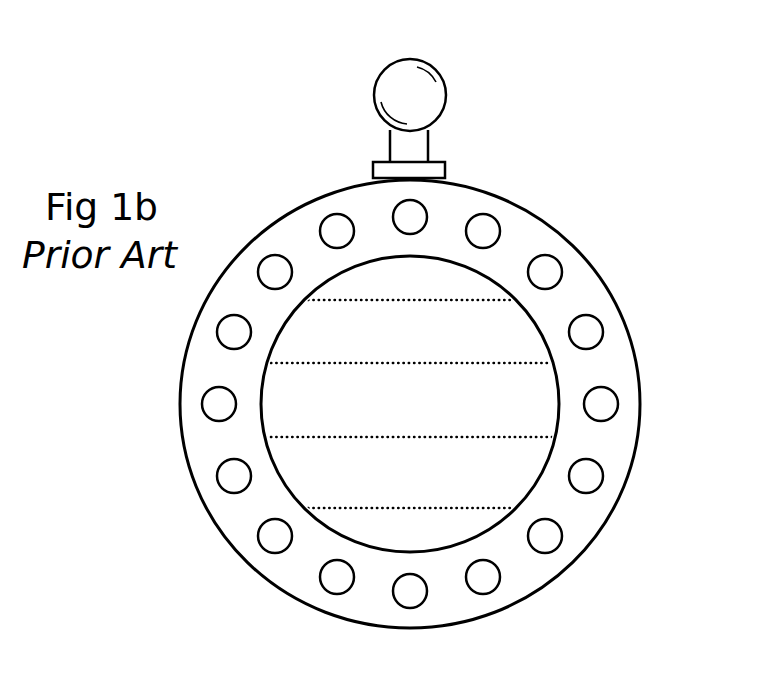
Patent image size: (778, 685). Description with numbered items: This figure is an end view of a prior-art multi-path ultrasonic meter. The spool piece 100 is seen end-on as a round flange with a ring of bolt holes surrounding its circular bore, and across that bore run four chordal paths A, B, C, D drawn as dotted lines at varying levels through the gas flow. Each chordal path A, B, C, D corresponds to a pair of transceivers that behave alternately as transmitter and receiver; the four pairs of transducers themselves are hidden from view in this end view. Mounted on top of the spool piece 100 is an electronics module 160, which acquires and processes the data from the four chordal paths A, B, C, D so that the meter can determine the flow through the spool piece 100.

The spool piece 100 is at (560, 231).
The electronics module 160 is at (442, 73).
The chordal path A is at (410, 286).
The chordal path B is at (410, 350).
The chordal path C is at (410, 451).
The chordal path D is at (410, 523).